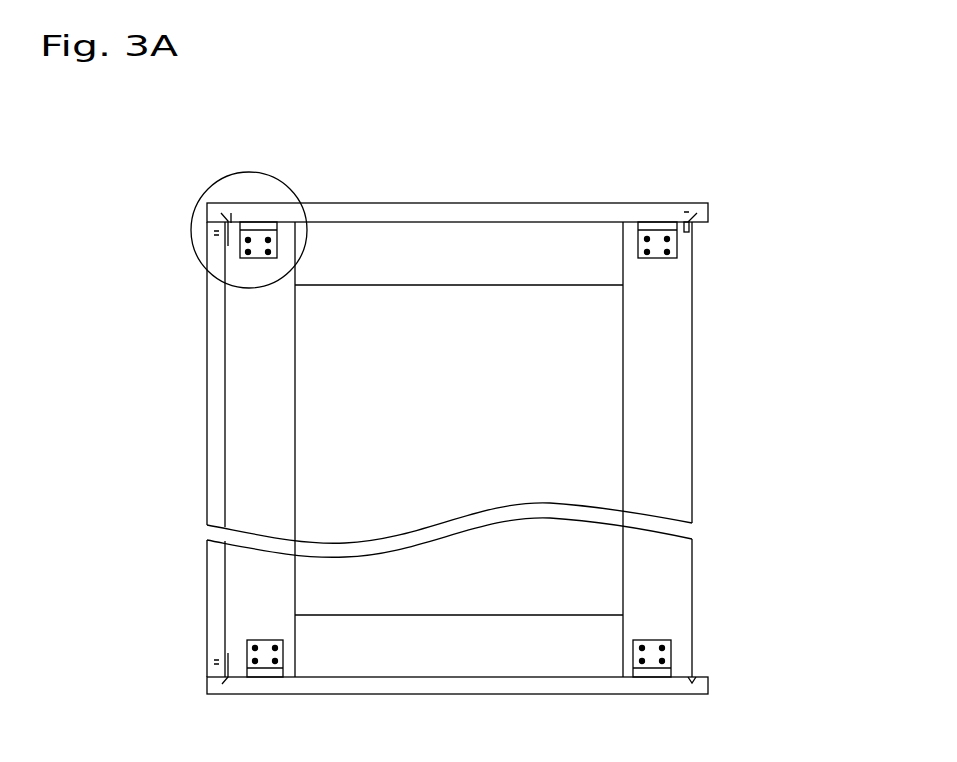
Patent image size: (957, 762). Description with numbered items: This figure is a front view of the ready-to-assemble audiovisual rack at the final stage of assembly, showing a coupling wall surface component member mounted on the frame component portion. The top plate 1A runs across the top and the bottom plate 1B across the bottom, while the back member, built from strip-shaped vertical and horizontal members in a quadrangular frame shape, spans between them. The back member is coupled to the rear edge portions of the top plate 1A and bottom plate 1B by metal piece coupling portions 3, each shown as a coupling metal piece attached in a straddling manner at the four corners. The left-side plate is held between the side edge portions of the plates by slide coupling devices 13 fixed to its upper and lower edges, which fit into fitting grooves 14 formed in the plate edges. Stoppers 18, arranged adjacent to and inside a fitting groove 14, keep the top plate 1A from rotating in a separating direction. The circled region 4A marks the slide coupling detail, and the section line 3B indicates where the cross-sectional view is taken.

The top plate 1A is at (548, 212).
The bottom plate 1B is at (545, 688).
The metal piece coupling portion 3 is at (268, 221).
The slide coupling device 13 is at (225, 242).
The fitting groove 14 is at (690, 212).
The stopper 18 is at (686, 232).
The detail circle (region shown in FIG. 4A) 4A is at (218, 180).
The section line 3B- 3B is at (190, 343).